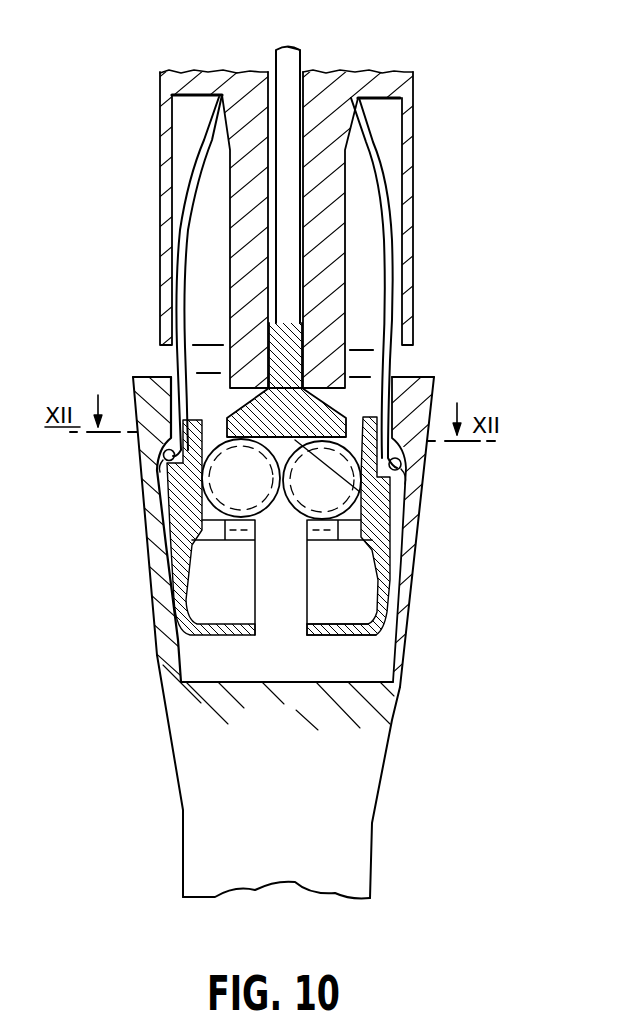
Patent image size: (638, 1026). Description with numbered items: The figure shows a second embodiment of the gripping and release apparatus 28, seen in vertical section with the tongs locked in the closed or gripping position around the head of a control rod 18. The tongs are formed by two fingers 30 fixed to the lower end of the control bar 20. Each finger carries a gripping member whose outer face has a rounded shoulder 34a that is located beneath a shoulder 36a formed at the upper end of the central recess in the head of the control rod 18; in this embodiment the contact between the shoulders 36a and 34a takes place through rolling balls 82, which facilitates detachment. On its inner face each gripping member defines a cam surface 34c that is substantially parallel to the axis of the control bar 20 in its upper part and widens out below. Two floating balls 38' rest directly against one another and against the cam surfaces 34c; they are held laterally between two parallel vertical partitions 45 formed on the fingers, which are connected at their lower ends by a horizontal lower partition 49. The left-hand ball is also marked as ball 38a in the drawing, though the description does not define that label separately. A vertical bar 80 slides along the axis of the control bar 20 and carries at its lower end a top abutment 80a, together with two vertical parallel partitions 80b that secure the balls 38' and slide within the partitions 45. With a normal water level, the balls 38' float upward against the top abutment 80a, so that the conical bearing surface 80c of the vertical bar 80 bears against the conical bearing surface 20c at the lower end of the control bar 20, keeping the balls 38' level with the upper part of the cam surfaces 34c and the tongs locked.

The control bar 20 is at (207, 72).
The vertical bar 80 is at (302, 52).
The conical bearing surface 80c is at (237, 405).
The conical bearing surface 20c is at (320, 410).
The fingers 30 is at (182, 193).
The apparatus 28 is at (442, 299).
The shoulder 36a is at (152, 497).
The vertical parallel partitions 80b is at (152, 552).
The rolling balls 82 is at (401, 463).
The rounded shoulder 34a is at (165, 440).
The cam surface 34c is at (386, 594).
The vertical partitions 45 is at (380, 638).
The horizontal lower partition 49 is at (312, 636).
The ball 38a is at (256, 523).
The balls 38' is at (322, 523).
The top abutment 80a is at (360, 492).
The control rod 18 is at (205, 862).